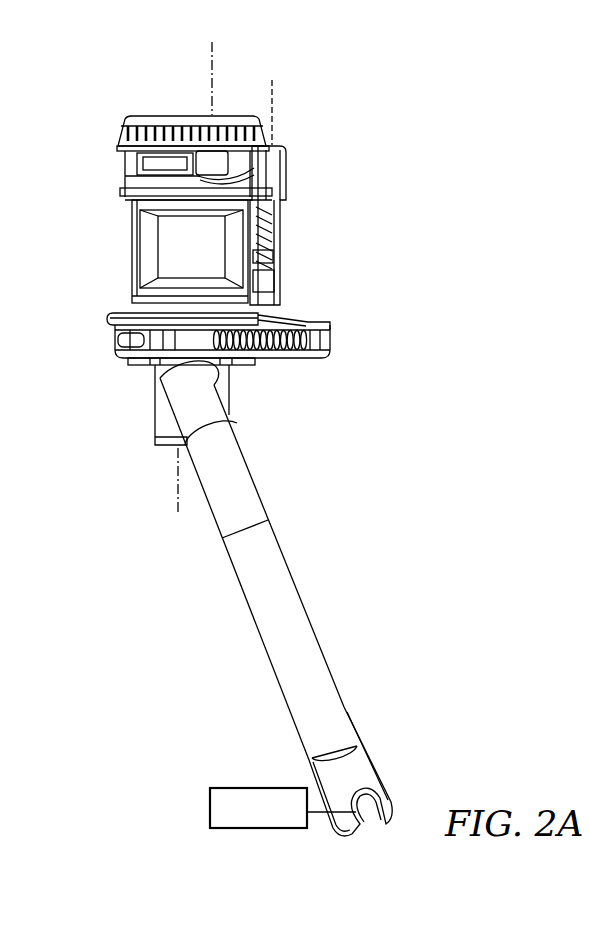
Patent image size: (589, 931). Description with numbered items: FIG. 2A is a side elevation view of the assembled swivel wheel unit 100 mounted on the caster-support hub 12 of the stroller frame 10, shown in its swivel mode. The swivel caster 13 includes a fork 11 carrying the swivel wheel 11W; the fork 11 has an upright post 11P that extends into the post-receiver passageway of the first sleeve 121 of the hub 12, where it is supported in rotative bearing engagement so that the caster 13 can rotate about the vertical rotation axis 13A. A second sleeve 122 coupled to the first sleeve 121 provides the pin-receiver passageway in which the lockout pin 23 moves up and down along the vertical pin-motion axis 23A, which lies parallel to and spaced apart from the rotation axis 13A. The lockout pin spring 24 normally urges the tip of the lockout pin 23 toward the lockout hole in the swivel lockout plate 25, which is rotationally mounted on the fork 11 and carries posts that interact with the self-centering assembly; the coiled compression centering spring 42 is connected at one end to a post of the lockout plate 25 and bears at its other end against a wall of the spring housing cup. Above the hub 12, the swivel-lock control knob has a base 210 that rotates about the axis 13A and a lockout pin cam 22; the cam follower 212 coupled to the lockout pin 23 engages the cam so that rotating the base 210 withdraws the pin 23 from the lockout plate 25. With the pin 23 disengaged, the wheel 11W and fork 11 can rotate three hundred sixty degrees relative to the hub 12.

The device 100 is at (386, 122).
The stroller frame 10 is at (66, 247).
The fork 11 is at (390, 757).
The upright post 11P is at (113, 318).
The swivel wheel 11W is at (258, 795).
The caster-support hub 12 is at (126, 243).
The first sleeve 121 is at (133, 264).
The second sleeve 122 is at (283, 277).
The swivel caster 13 is at (334, 636).
The vertical rotation axis 13A is at (214, 79).
The lockout pin cam 22 is at (212, 153).
The lockout pin 23 is at (278, 253).
The vertical pin-motion axis 23A is at (275, 108).
The lockout pin spring 24 is at (293, 216).
The swivel lockout plate 25 is at (293, 308).
The centering spring 42 is at (277, 366).
The base 210 is at (136, 173).
The cam follower 212 is at (113, 316).